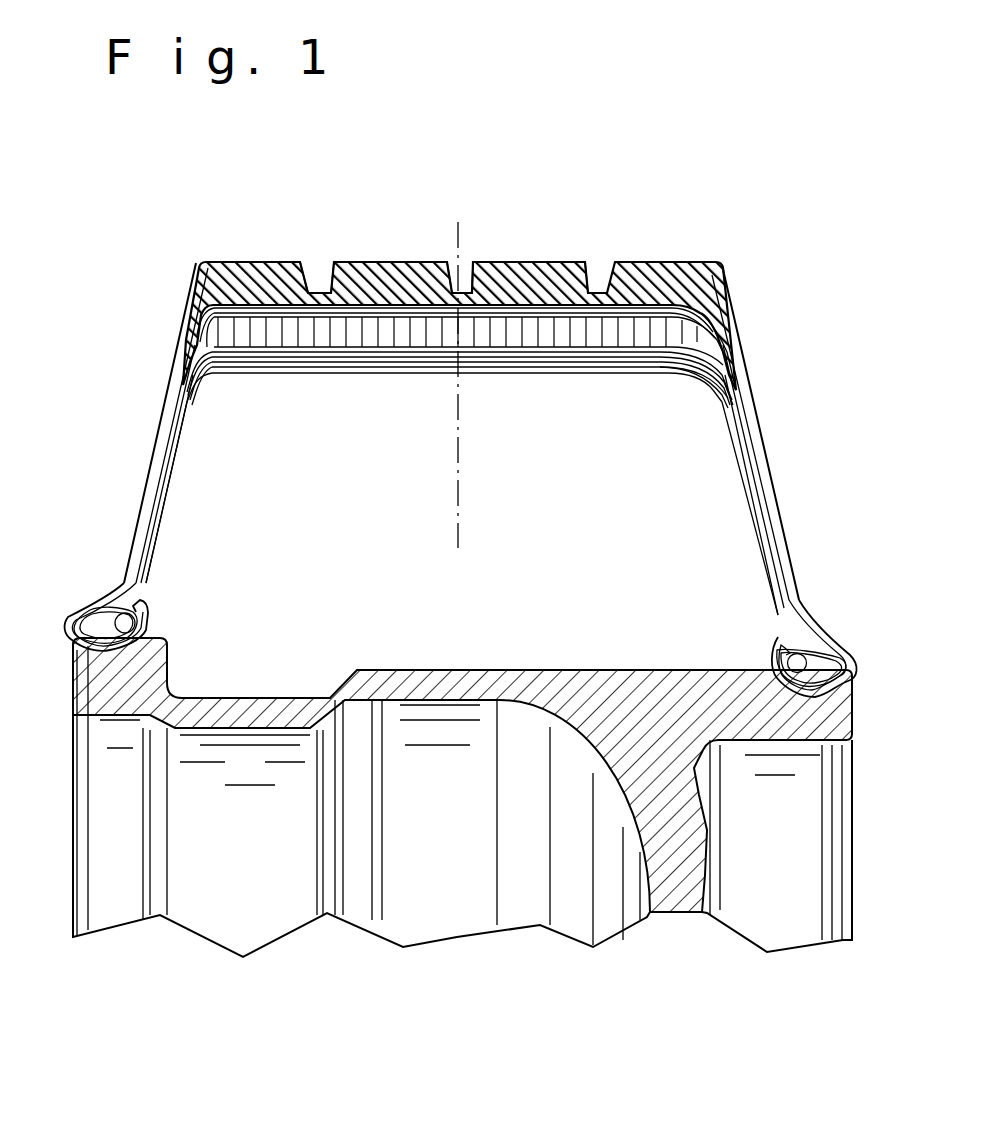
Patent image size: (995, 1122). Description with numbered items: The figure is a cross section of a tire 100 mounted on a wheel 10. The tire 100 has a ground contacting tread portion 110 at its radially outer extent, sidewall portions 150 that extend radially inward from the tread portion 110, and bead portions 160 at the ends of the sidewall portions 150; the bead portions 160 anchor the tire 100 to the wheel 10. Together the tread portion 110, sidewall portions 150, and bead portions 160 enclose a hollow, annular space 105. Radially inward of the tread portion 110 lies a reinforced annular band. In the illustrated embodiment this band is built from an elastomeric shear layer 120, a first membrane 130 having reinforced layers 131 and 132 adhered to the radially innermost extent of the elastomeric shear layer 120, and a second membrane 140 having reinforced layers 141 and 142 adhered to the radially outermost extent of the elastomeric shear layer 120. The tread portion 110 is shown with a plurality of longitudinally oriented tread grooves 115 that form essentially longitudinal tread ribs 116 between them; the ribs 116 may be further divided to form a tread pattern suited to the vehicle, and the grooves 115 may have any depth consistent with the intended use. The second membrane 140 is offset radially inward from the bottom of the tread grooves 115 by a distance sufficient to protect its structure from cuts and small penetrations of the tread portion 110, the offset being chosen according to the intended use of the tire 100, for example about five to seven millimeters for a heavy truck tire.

The wheel 10 is at (654, 671).
The tire 100 is at (138, 338).
The hollow annular space 105 is at (336, 566).
The tread portion 110 is at (277, 262).
The tread grooves 115 is at (453, 275).
The tread ribs 116 is at (513, 262).
The elastomeric shear layer 120 is at (423, 333).
The first membrane 130 is at (527, 366).
The reinforced layer 131 is at (667, 373).
The reinforced layer 132 is at (672, 345).
The second membrane 140 is at (632, 275).
The reinforced layer 141 is at (692, 332).
The reinforced layer 142 is at (728, 287).
The sidewall portions 150 is at (148, 476).
The bead portions 160 is at (105, 594).